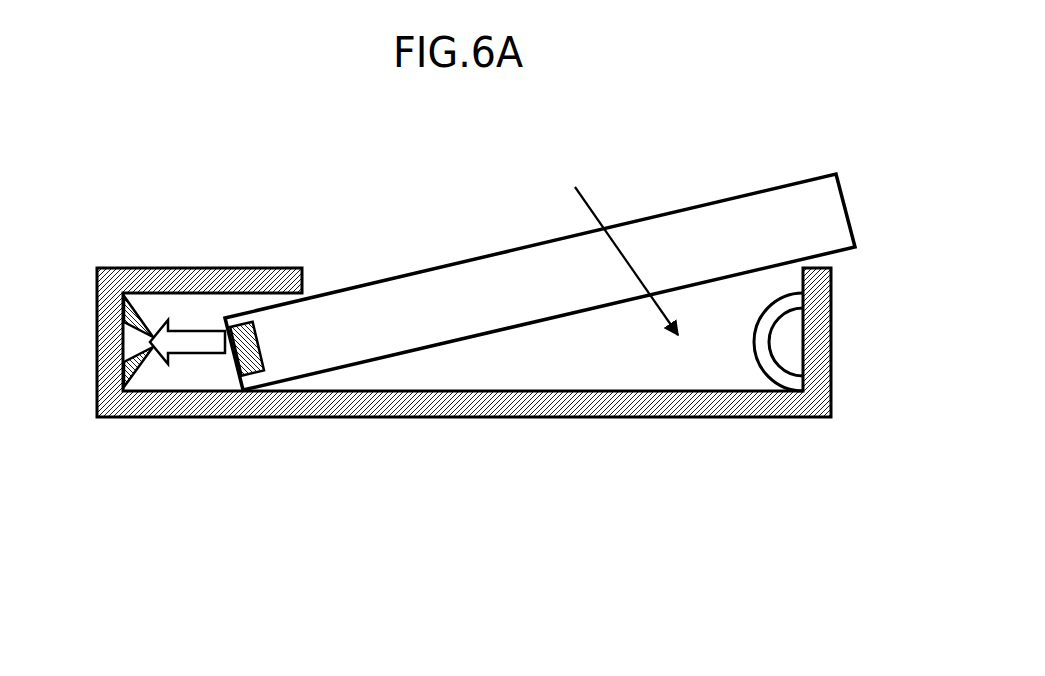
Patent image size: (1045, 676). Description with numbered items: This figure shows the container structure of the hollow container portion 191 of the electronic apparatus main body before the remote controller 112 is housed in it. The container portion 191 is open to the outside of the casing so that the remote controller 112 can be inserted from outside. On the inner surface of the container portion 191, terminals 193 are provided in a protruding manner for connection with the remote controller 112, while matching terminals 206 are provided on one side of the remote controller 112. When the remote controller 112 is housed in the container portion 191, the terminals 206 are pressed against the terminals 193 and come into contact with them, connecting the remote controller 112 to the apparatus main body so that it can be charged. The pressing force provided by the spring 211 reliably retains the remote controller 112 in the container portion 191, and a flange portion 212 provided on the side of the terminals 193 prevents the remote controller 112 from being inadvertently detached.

The remote controller 112 is at (545, 238).
The container portion 191 is at (614, 246).
The terminals 193 is at (146, 313).
The terminals 206 is at (237, 370).
The spring 211 is at (755, 363).
The flange portion 212 is at (148, 292).